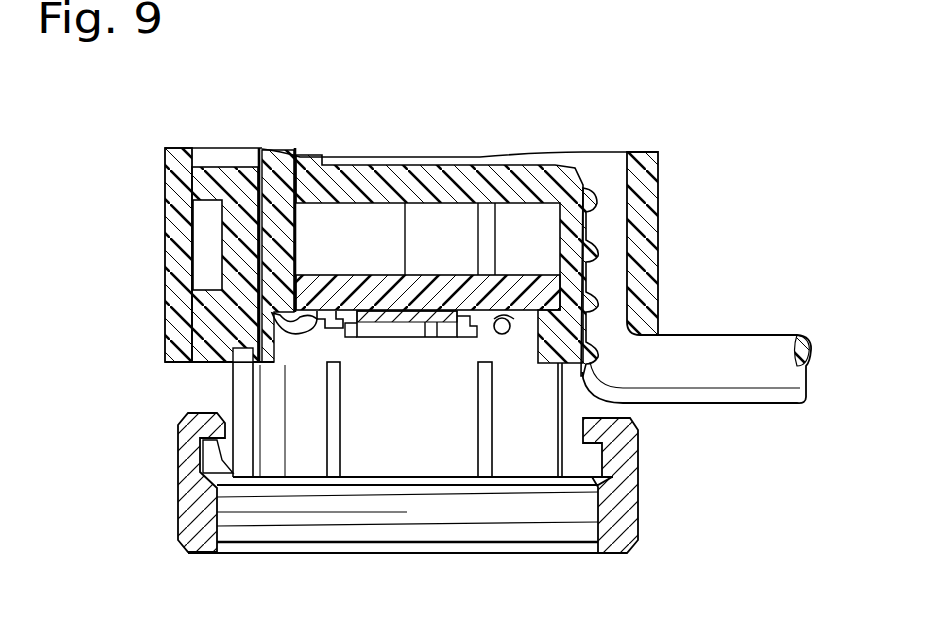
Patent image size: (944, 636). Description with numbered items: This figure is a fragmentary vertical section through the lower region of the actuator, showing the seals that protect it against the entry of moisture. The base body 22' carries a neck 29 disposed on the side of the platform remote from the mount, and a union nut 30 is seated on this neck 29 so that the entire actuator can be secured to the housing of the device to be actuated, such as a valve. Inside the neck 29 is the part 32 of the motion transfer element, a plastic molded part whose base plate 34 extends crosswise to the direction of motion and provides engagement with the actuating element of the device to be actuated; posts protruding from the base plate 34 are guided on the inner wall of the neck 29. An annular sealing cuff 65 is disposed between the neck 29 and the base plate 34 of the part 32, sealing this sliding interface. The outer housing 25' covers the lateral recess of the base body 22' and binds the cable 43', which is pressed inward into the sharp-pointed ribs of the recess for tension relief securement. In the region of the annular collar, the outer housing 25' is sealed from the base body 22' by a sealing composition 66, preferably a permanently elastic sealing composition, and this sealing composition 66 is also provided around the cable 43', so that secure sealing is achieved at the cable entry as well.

The base body 22' is at (167, 264).
The outer housing 25' is at (689, 243).
The neck 29 is at (250, 345).
The union nut 30 is at (198, 507).
The part of the motion transfer element 32 is at (296, 146).
The base plate 34 is at (330, 290).
The cable 43' is at (696, 416).
The annular sealing cuff 65 is at (512, 331).
The sealing composition 66 is at (170, 350).